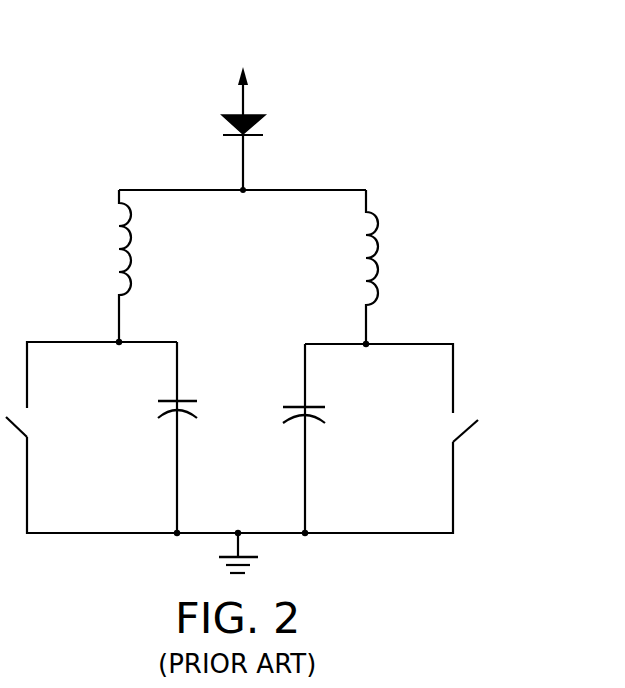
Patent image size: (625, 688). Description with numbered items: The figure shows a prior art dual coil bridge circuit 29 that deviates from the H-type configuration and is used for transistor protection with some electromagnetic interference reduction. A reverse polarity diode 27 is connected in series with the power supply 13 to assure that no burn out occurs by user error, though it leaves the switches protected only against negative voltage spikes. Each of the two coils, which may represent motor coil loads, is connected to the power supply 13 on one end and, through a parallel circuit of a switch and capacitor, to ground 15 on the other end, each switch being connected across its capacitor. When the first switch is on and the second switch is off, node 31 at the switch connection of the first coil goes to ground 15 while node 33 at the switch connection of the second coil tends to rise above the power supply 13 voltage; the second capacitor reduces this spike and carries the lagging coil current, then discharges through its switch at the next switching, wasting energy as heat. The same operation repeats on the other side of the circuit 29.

The power supply 13 is at (262, 45).
The reverse polarity diode 27 is at (262, 125).
The bridge circuit 29 is at (483, 387).
The node 31 is at (117, 341).
The node 33 is at (368, 343).
The ground 15 is at (253, 563).